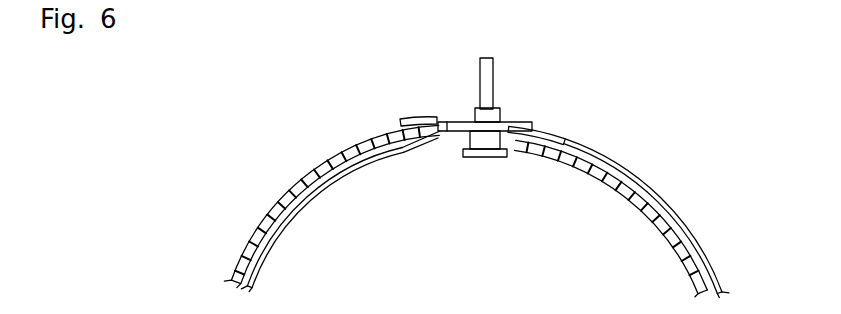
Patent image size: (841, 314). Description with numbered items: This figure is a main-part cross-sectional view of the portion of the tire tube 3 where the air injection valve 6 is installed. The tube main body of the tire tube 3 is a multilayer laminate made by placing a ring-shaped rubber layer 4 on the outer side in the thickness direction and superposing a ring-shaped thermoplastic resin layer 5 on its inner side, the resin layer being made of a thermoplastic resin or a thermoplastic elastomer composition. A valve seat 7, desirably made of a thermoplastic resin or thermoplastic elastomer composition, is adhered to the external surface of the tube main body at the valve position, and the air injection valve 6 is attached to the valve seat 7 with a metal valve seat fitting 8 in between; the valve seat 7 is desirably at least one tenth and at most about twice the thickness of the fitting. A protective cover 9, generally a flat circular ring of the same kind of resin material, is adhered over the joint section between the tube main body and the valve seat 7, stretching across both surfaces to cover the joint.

The tire tube 3 is at (309, 172).
The rubber layer 4 is at (580, 156).
The thermoplastic resin layer 5 is at (647, 222).
The air injection valve 6 is at (488, 83).
The valve seat 7 is at (450, 122).
The metal valve seat fitting 8 is at (462, 121).
The protective cover 9 is at (433, 118).